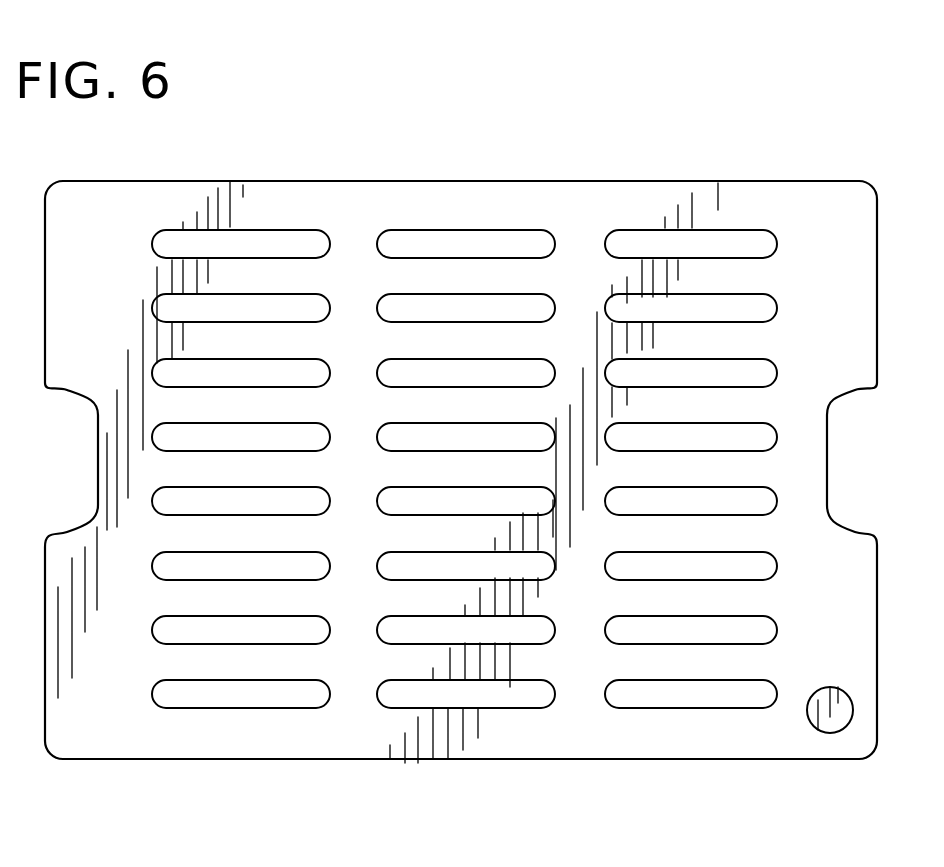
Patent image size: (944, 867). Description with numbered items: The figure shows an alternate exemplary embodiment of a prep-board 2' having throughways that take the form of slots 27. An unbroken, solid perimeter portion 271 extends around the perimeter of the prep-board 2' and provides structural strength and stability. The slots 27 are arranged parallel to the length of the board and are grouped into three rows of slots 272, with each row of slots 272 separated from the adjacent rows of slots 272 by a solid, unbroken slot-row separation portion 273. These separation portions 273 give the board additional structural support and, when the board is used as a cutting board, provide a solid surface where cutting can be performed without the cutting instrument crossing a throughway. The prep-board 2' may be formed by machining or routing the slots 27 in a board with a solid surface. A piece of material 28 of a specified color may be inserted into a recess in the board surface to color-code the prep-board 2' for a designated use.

The prep-board 2' is at (480, 431).
The slot 27 is at (152, 247).
The piece of material 28 is at (835, 728).
The solid perimeter portion 271 is at (818, 248).
The row of slots 272 is at (355, 230).
The slot-row separation portion 273 is at (463, 440).